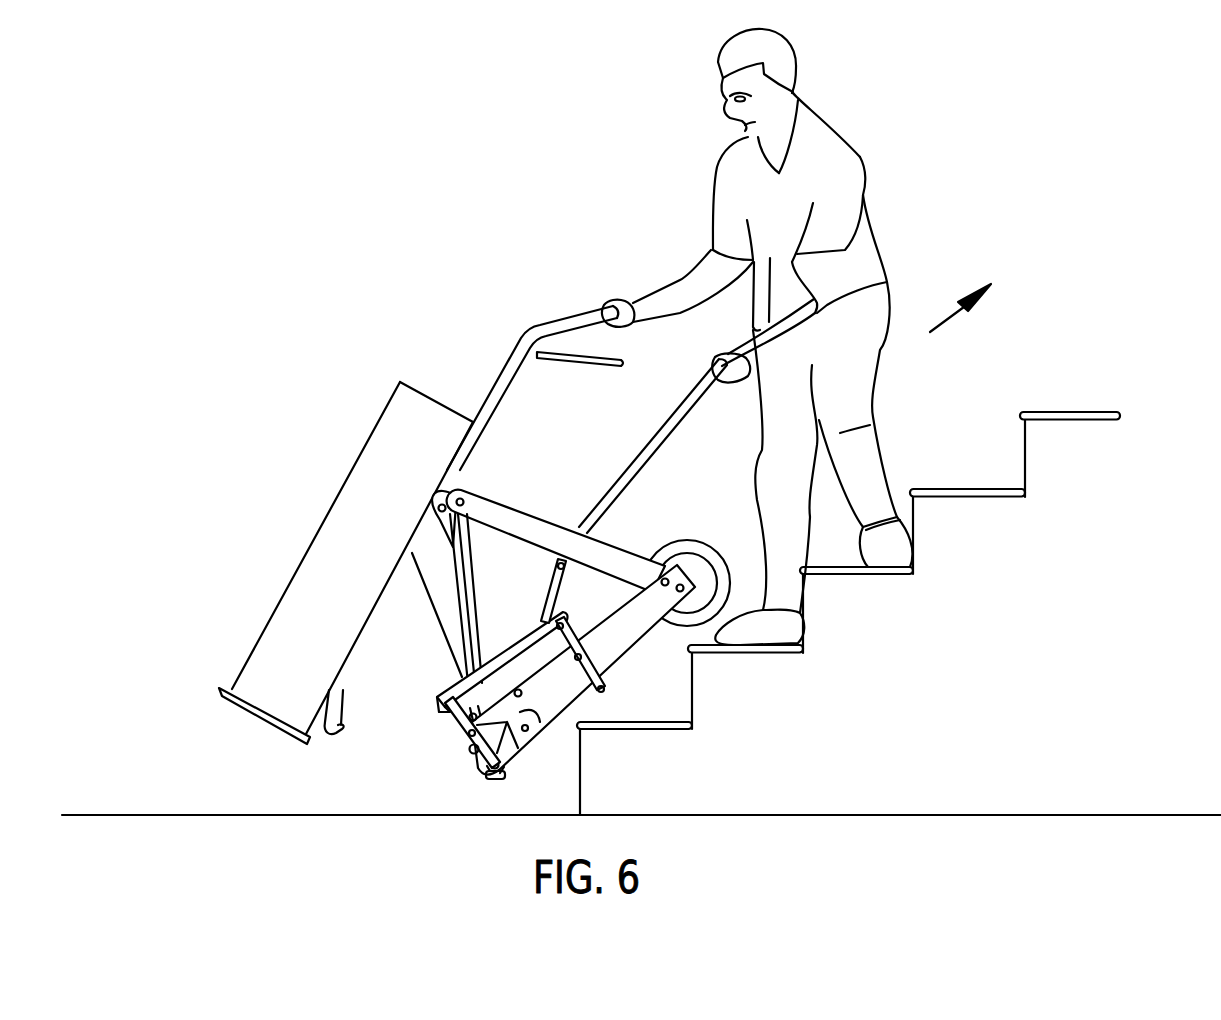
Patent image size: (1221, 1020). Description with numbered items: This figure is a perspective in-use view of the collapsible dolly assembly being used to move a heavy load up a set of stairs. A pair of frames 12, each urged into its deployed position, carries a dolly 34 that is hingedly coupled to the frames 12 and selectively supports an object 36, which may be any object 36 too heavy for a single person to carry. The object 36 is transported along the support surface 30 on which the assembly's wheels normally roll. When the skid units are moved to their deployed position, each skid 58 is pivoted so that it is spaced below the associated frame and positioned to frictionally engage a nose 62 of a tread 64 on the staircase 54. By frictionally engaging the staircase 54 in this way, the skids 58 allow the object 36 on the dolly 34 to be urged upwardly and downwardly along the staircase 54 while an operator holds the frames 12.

The frames 12 is at (546, 537).
The support surface 30 is at (172, 813).
The dolly 34 is at (462, 355).
The object 36 is at (302, 555).
The staircase 54 is at (850, 584).
The skid 58 is at (520, 772).
The nose 62 is at (688, 648).
The tread 64 is at (711, 652).